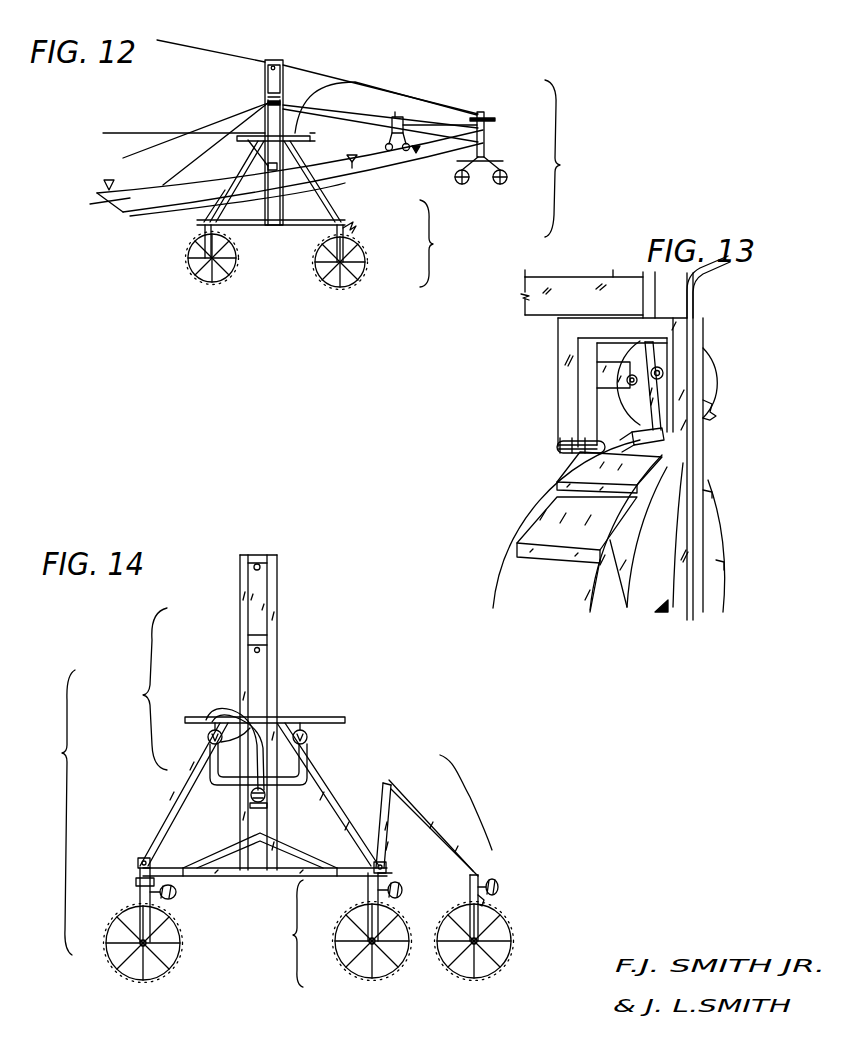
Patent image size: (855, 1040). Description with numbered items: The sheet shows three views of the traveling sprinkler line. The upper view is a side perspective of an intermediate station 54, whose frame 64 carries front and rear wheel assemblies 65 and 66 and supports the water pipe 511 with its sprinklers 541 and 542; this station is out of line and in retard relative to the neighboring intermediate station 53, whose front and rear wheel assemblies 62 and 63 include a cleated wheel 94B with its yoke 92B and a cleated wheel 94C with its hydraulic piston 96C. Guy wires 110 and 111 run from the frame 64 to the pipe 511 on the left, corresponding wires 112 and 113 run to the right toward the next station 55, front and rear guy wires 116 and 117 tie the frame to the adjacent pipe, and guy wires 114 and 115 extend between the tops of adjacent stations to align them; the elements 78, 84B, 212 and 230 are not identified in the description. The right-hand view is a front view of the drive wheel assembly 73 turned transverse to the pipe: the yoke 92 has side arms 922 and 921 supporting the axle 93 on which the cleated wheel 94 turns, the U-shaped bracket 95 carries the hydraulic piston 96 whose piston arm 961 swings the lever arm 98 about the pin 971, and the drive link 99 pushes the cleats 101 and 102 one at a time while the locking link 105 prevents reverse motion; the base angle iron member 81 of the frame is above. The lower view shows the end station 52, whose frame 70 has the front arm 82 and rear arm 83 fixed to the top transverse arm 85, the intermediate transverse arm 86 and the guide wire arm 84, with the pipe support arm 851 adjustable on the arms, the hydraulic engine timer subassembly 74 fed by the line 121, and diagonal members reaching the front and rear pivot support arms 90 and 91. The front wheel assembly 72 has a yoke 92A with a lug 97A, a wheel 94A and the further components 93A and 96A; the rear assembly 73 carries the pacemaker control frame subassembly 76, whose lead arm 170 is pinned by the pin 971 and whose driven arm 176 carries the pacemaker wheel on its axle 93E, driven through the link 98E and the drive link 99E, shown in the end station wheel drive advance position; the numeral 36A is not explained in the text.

In FIG. 12, the tower 78 is at (265, 85).
In FIG. 12, the guy wire 114 is at (226, 39).
In FIG. 12, the guy wire 115 is at (315, 75).
In FIG. 12, the hose 84B is at (385, 83).
In FIG. 12, the guy wire 110 is at (195, 130).
In FIG. 12, the guy wire 111 is at (227, 138).
In FIG. 12, the line 230 is at (116, 133).
In FIG. 12, the guy wire 112 is at (338, 126).
In FIG. 12, the guy wire 113 is at (332, 132).
In FIG. 12, the fitting 212 is at (250, 160).
In FIG. 12, the front guy wire 116 is at (316, 200).
In FIG. 12, the pipe 511 is at (132, 205).
In FIG. 14, the pipe 511 is at (250, 797).
In FIG. 12, the rear guy wire 117 is at (333, 183).
In FIG. 12, the sprinkler 541 is at (350, 163).
In FIG. 12, the sprinkler 542 is at (418, 153).
In FIG. 12, the station 55 is at (398, 117).
In FIG. 12, the frame 64 is at (485, 116).
In FIG. 14, the frame 64 is at (301, 744).
In FIG. 12, the front wheel assembly 65 is at (462, 185).
In FIG. 12, the rear wheel assembly 66 is at (503, 186).
In FIG. 12, the intermediate station 54 is at (565, 158).
In FIG. 12, the intermediate station 53 is at (440, 243).
In FIG. 12, the front wheel assembly 62 is at (189, 264).
In FIG. 12, the cleated wheel 94B is at (193, 273).
In FIG. 12, the yoke 92B is at (205, 238).
In FIG. 12, the rear wheel assembly 63 is at (368, 265).
In FIG. 12, the cleated wheel 94C is at (365, 260).
In FIG. 12, the hydraulic piston 96C is at (356, 228).
In FIG. 13, the base angle iron member 81 is at (540, 313).
In FIG. 13, the yoke side arm 922 is at (568, 350).
In FIG. 13, the yoke side arm 921 is at (697, 562).
In FIG. 13, the hydraulic piston 96 is at (710, 360).
In FIG. 13, the cleated wheel 94 is at (720, 518).
In FIG. 14, the cleated wheel 94 is at (353, 967).
In FIG. 13, the U-shaped bracket 95 is at (603, 378).
In FIG. 13, the piston arm 961 is at (667, 372).
In FIG. 13, the lever arm 98 is at (660, 403).
In FIG. 13, the drive link 99 is at (640, 437).
In FIG. 13, the cleat 102 is at (667, 457).
In FIG. 13, the locking link 105 is at (563, 472).
In FIG. 13, the cleat 101 is at (573, 497).
In FIG. 14, the end station 52 is at (50, 812).
In FIG. 14, the frame 70 is at (143, 689).
In FIG. 14, the rear vertical pipe supporting arm 83 is at (276, 603).
In FIG. 14, the front vertical pipe supporting arm 82 is at (240, 592).
In FIG. 14, the top transverse arm 85 is at (264, 553).
In FIG. 14, the intermediate transverse arm 86 is at (257, 632).
In FIG. 14, the hydraulic engine timer subassembly 74 is at (296, 712).
In FIG. 14, the guide wire arm 84 is at (205, 720).
In FIG. 14, the line 121 is at (250, 744).
In FIG. 14, the transverse pipe support arm 851 is at (267, 804).
In FIG. 14, the front wheel assembly 72 is at (156, 926).
In FIG. 14, the front vertical pivot support arm 90 is at (137, 867).
In FIG. 14, the yoke 92A is at (153, 920).
In FIG. 14, the lug 97A is at (150, 887).
In FIG. 14, the nozzle 96A is at (177, 892).
In FIG. 14, the wheel rim 93A is at (163, 970).
In FIG. 14, the wheel 94A is at (178, 940).
In FIG. 14, the drive wheel assembly 73 is at (339, 930).
In FIG. 14, the yoke 92 is at (372, 900).
In FIG. 14, the axle 93 is at (340, 938).
In FIG. 14, the rear vertical pivot support arm 91 is at (386, 865).
In FIG. 14, the pin 971 is at (386, 873).
In FIG. 14, the pacemaker control frame subassembly 76 is at (440, 815).
In FIG. 14, the forward lead arm 170 is at (395, 812).
In FIG. 14, the rear driven arm 176 is at (433, 824).
In FIG. 14, the wheel unit 36A is at (509, 926).
In FIG. 14, the link 98E is at (480, 873).
In FIG. 14, the drive link 99E is at (482, 903).
In FIG. 14, the axle 93E is at (482, 973).